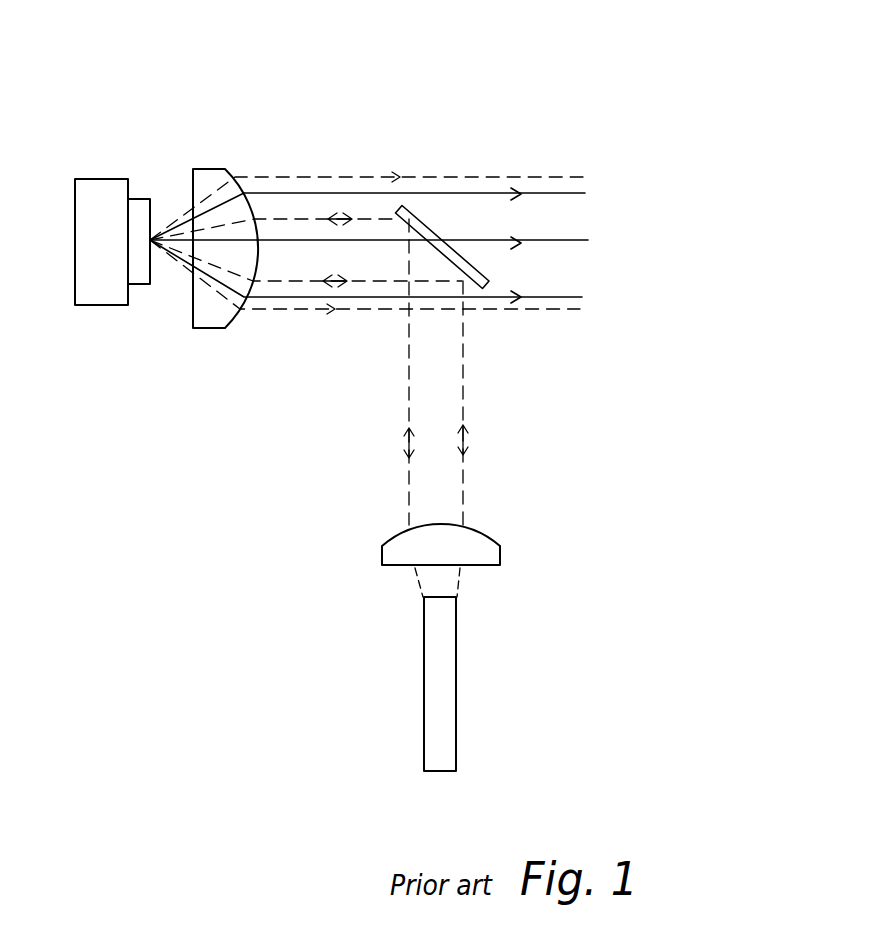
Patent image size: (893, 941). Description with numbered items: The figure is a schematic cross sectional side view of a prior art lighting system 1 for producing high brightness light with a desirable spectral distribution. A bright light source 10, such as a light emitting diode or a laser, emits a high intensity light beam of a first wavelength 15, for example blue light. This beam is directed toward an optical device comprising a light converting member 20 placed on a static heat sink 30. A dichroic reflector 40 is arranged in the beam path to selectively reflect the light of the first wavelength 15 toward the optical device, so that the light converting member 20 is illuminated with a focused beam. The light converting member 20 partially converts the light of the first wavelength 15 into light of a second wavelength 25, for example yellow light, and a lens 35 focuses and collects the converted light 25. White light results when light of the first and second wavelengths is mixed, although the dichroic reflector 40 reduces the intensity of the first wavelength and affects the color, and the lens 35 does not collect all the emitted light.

The system 1 is at (198, 86).
The light source 10 is at (442, 645).
The light of a first wavelength 15 is at (263, 310).
The light converting member 20 is at (140, 207).
The light of a second wavelength 25 is at (288, 184).
The static heat sink 30 is at (92, 188).
The lens 35 is at (205, 310).
The dichroic reflector 40 is at (484, 289).